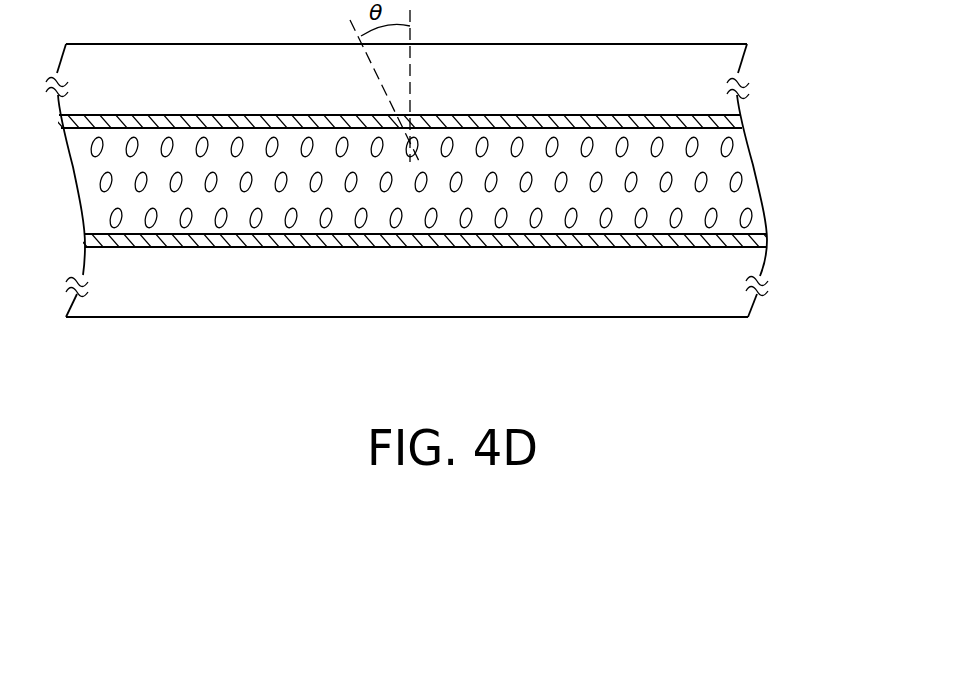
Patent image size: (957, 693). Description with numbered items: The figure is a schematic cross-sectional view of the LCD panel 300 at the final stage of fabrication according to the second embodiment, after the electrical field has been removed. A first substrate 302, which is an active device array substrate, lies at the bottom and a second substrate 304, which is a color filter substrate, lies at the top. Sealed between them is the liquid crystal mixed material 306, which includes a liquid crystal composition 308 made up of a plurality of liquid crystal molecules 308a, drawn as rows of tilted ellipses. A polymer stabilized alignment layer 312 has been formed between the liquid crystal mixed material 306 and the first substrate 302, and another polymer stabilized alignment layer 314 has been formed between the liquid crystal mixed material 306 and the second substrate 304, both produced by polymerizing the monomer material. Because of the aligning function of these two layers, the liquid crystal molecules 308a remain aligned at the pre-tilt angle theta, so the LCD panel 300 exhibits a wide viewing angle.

The LCD panel 300 is at (792, 398).
The first substrate 302 is at (730, 303).
The second substrate 304 is at (713, 62).
The liquid crystal mixed material 306 is at (848, 127).
The liquid crystal composition 308 is at (745, 203).
The liquid crystal molecules 308a is at (732, 150).
The polymer stabilized alignment layer 312 is at (756, 240).
The polymer stabilized alignment layer 314 is at (740, 122).